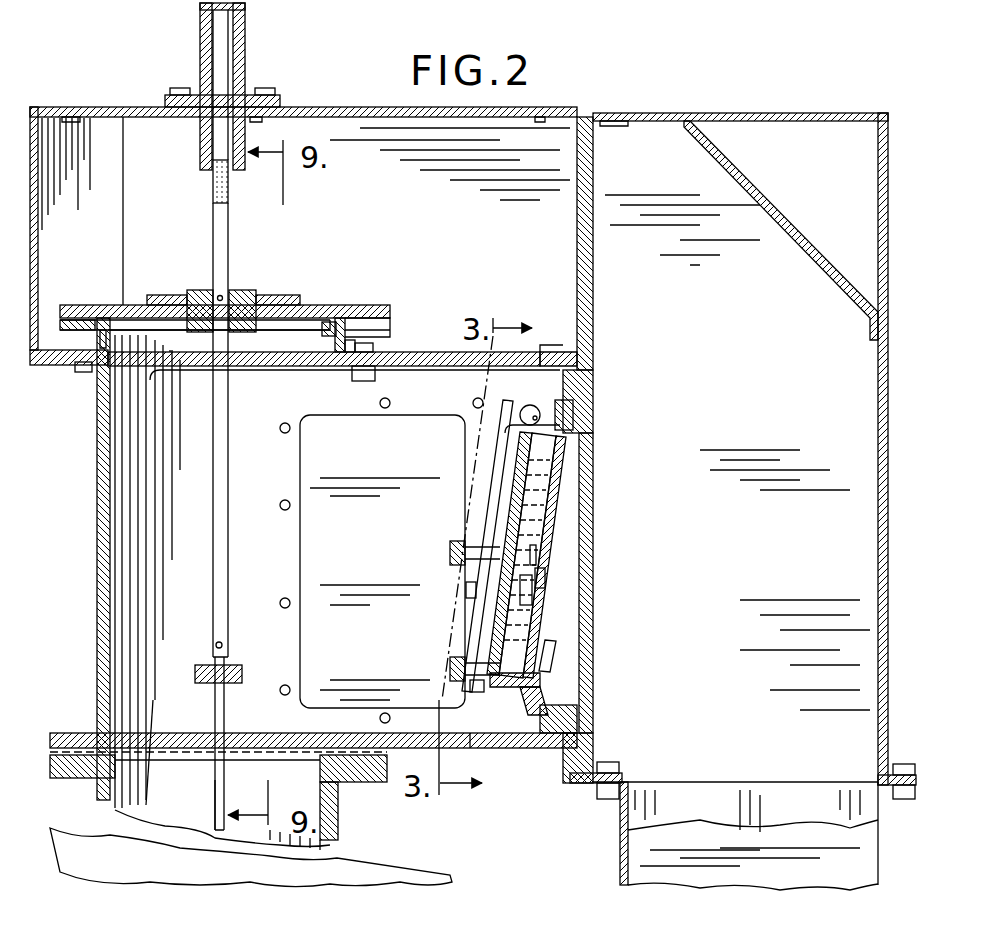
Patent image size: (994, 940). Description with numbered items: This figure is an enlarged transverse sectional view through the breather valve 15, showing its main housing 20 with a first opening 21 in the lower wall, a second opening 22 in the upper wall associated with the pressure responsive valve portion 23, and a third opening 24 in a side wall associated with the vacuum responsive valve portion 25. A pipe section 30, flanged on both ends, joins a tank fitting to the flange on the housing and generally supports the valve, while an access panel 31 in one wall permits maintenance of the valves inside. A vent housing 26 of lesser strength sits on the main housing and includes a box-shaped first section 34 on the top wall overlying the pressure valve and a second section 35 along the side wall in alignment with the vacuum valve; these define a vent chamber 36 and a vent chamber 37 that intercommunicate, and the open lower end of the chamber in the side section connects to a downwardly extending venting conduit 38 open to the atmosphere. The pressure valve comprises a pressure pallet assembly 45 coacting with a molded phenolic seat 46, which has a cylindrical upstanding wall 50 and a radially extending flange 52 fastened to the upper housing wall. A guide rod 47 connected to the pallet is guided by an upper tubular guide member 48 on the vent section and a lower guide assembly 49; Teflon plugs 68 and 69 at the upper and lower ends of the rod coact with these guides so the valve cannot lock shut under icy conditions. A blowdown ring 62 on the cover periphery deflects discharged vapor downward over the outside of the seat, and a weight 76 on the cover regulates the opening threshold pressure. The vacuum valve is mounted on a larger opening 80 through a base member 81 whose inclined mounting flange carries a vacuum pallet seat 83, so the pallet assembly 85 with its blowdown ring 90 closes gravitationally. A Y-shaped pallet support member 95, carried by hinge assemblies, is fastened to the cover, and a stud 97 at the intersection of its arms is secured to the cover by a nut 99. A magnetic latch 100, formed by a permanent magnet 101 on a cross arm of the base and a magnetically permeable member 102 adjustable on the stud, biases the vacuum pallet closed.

The valve 15 is at (594, 108).
The housing 20 is at (95, 525).
The first opening 21 is at (151, 732).
The second opening 22 is at (243, 362).
The pressure responsive valve portion 23 is at (320, 302).
The third opening 24 is at (544, 666).
The vacuum responsive valve portion 25 is at (472, 497).
The vent housing 26 is at (728, 108).
The pipe section 30 is at (340, 846).
The access panel 31 is at (408, 557).
The first section 34 is at (328, 107).
The second section 35 is at (886, 468).
The vent chamber 36 is at (420, 208).
The vent chamber 37 is at (760, 441).
The venting conduit 38 is at (888, 862).
The pressure pallet assembly 45 is at (342, 302).
The seat 46 is at (340, 337).
The guide rod 47 is at (208, 234).
The upper tubular guide member 48 is at (200, 145).
The lower guide assembly 49 is at (244, 664).
The upstanding wall 50 is at (322, 330).
The radially extending flange 52 is at (378, 346).
The blowdown ring 62 is at (392, 316).
The plug 68 is at (212, 180).
The plug 69 is at (214, 782).
The weight 76 is at (270, 288).
The opening 80 is at (552, 716).
The base member 81 is at (592, 731).
The vacuum pallet seat 83 is at (548, 456).
The pallet assembly 85 is at (490, 650).
The blowdown ring 90 is at (492, 692).
The pallet support member 95 is at (466, 590).
The stud 97 is at (478, 522).
The nut 99 is at (522, 560).
The magnetic latch 100 is at (533, 590).
The permanent magnet 101 is at (545, 580).
The magnetically permeable member 102 is at (536, 555).